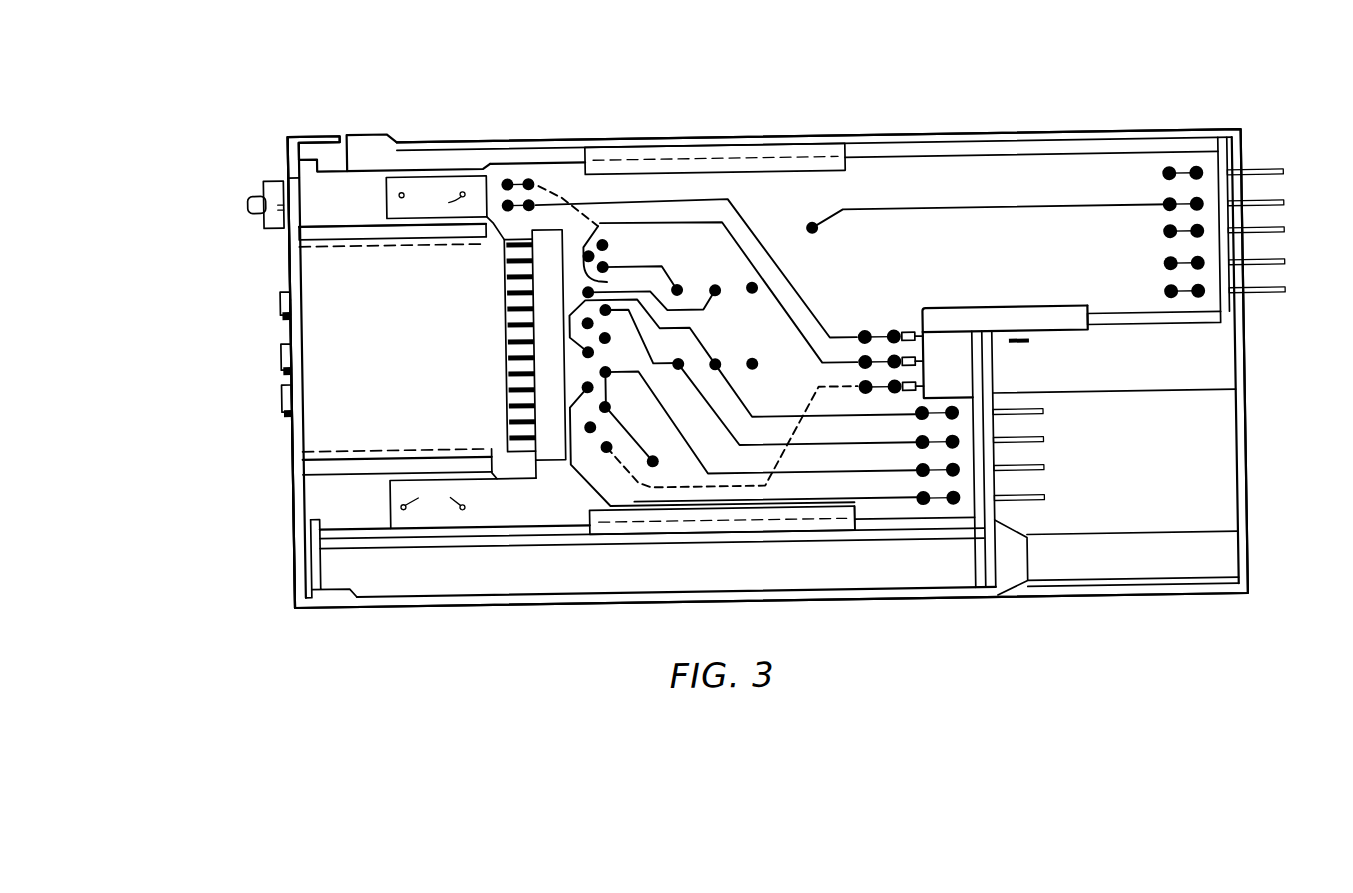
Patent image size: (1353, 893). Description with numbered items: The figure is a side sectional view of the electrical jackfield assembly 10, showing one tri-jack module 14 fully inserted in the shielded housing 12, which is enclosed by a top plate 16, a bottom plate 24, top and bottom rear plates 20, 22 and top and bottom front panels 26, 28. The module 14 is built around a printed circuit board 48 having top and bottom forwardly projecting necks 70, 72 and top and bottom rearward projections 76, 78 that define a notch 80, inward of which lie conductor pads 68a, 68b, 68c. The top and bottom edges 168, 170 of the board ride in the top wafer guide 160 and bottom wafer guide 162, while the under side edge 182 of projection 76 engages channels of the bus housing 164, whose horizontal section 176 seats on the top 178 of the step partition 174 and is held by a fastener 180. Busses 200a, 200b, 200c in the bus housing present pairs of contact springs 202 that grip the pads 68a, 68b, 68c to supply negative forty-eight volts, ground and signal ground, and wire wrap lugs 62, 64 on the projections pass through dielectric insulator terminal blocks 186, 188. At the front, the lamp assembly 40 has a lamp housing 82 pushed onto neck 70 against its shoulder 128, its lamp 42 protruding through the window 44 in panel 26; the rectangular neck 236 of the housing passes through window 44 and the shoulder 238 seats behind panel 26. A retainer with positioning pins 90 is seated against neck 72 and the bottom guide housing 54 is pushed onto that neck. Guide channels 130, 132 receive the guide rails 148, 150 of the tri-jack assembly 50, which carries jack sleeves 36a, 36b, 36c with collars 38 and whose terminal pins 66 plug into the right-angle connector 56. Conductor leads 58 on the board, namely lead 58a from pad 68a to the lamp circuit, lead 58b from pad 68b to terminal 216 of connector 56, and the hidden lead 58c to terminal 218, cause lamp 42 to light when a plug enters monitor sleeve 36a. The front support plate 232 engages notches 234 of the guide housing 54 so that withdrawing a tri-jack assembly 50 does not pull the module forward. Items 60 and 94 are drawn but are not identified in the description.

The electrical jackfield assembly 10 is at (762, 92).
The housing 12 is at (892, 141).
The module 14 is at (940, 160).
The top plate 16 is at (505, 151).
The top rear plate 20 is at (1251, 338).
The bottom rear plate 22 is at (1253, 481).
The bottom plate 24 is at (503, 552).
The top front panel 26 is at (296, 257).
The bottom front panel 28 is at (300, 486).
The jack sleeve 36a is at (293, 313).
The jack sleeve 36b is at (293, 368).
The jack sleeve 36c is at (293, 406).
The collar 38 is at (293, 298).
The lamp assembly 40 is at (356, 155).
The lamp 42 is at (264, 200).
The window 44 is at (296, 181).
The printed circuit board 48 is at (862, 180).
The tri-jack assembly 50 is at (328, 416).
The bottom guide housing 54 is at (317, 510).
The right-angle connector 56 is at (535, 287).
The conductor leads 58 is at (742, 400).
The conductor lead 58a is at (801, 291).
The conductor lead 58b is at (748, 254).
The conductor lead 58c is at (582, 194).
The plated through holes 60 is at (728, 301).
The wire wrap lugs 62 is at (1297, 210).
The wire wrap lugs 64 is at (1046, 474).
The terminal pins 66 is at (521, 386).
The conductor pad 68a is at (884, 340).
The conductor pad 68b is at (860, 372).
The conductor pad 68c is at (880, 403).
The top forwardly projecting neck 70 is at (425, 202).
The bottom forwardly projecting neck 72 is at (421, 513).
The top rearward projection 76 is at (983, 171).
The bottom rearward projection 78 is at (967, 527).
The notch 80 is at (918, 340).
The lamp housing 82 is at (338, 178).
The positioning pins 90 is at (433, 349).
The mounting hole 94 is at (406, 194).
The shoulder 128 is at (508, 163).
The guide channel 130 is at (394, 245).
The guide channel 132 is at (393, 449).
The guide rails 148 is at (440, 250).
The guide rails 150 is at (445, 447).
The top wafer guide 160 is at (710, 158).
The bottom wafer guide 162 is at (697, 535).
The bus housing 164 is at (1018, 312).
The top edge 168 is at (533, 168).
The bottom edge 170 is at (463, 533).
The step partition 174 is at (1000, 376).
The horizontal section 176 is at (1046, 318).
The top 178 is at (1134, 336).
The fastener 180 is at (1042, 352).
The under side edge 182 is at (1124, 338).
The dielectric insulator terminal block 186 is at (1255, 295).
The dielectric insulator terminal block 188 is at (1008, 502).
The bus 200a is at (921, 347).
The bus 200b is at (921, 372).
The bus 200c is at (921, 397).
The contact springs 202 is at (910, 415).
The terminal 216 is at (629, 259).
The terminal 218 is at (616, 249).
The front support plate 232 is at (310, 564).
The notches 234 is at (315, 529).
The rectangular neck 236 is at (289, 178).
The shoulder 238 is at (310, 148).